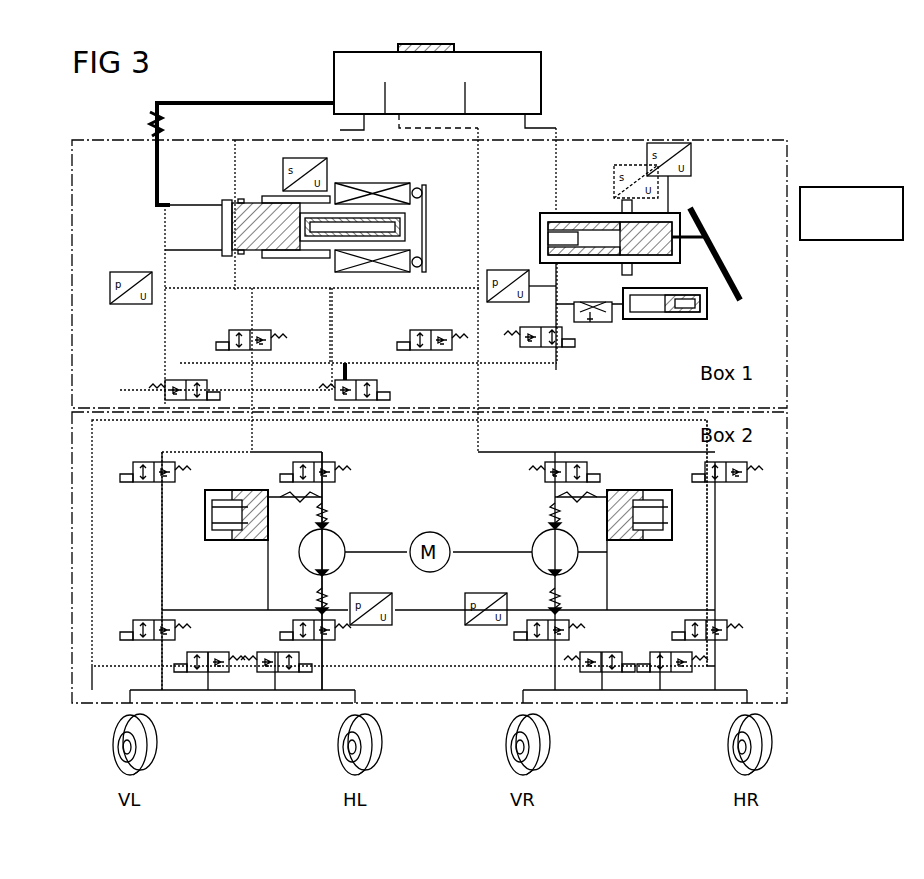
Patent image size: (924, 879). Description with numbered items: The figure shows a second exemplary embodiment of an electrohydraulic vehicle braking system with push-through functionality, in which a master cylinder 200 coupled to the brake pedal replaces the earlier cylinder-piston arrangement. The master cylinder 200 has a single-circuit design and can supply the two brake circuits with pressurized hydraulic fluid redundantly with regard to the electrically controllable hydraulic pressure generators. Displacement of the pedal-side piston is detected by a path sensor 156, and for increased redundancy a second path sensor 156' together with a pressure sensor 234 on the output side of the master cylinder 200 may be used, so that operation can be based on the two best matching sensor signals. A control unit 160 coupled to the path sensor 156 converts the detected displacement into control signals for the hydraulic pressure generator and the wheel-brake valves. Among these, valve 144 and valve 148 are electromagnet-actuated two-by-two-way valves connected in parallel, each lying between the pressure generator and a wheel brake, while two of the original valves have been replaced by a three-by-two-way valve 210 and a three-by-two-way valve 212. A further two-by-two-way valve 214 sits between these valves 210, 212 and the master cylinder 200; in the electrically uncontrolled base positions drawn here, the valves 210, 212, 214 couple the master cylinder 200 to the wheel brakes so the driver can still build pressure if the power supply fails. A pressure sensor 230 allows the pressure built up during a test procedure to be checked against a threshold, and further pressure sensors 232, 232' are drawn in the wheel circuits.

The valve 144 is at (229, 335).
The valve 148 is at (410, 338).
The path sensor 156 is at (705, 178).
The path sensor 156' is at (636, 154).
The control unit 160 is at (851, 187).
The master cylinder 200 is at (583, 213).
The 3/2-way valve 210 is at (218, 412).
The 3/2-way valve 212 is at (305, 412).
The 2/2-way valve 214 is at (563, 340).
The pressure sensor 230 is at (134, 272).
The pressure sensor 232 is at (380, 646).
The pressure sensor 232' is at (477, 646).
The pressure sensor 234 is at (510, 270).